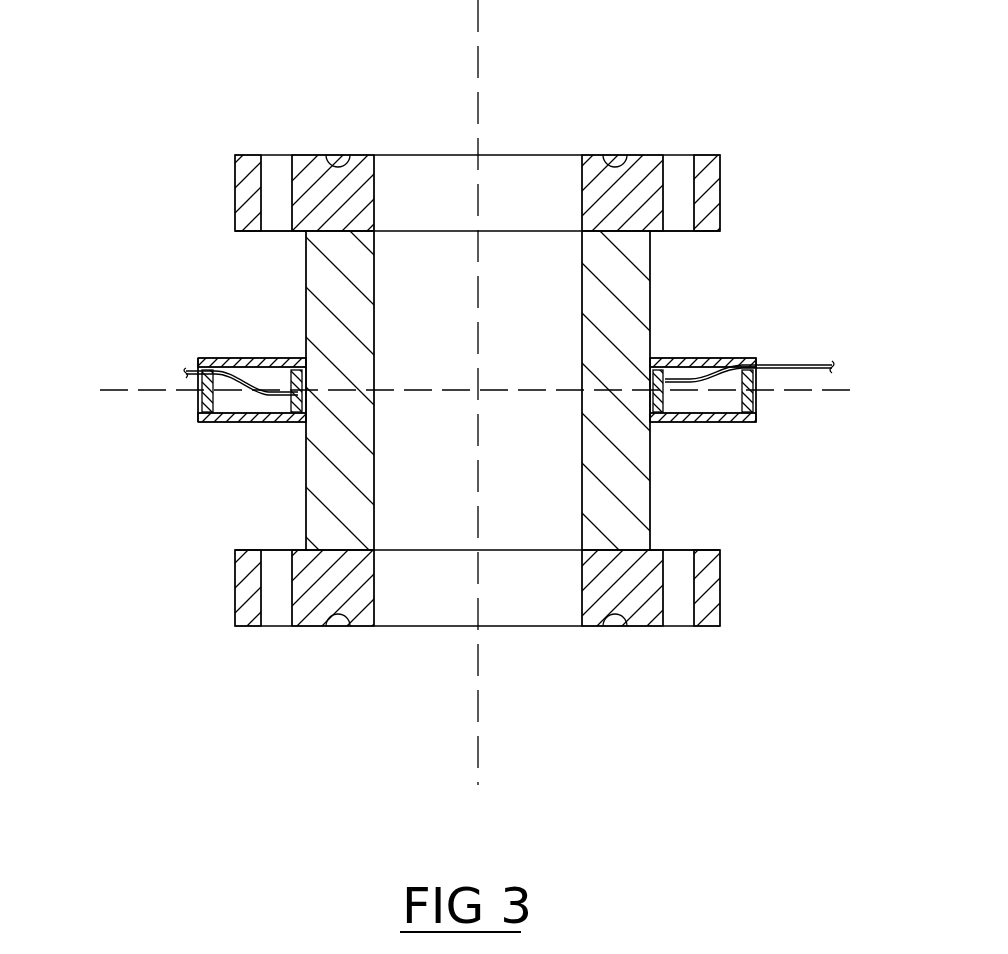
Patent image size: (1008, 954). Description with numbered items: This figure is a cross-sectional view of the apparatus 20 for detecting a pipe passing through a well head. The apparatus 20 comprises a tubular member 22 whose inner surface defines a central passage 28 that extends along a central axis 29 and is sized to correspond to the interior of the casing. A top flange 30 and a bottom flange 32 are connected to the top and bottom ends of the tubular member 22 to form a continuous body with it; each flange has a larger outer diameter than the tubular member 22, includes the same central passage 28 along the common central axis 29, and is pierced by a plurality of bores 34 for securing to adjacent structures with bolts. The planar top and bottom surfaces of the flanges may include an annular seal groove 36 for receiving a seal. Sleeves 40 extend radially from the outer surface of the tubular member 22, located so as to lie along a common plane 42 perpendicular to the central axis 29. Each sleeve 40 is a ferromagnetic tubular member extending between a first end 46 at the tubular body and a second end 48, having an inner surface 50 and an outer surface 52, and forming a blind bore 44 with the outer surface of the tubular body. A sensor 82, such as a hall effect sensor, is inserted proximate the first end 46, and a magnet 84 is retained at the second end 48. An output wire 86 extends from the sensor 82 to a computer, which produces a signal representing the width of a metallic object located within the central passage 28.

The apparatus 20 is at (653, 84).
The tubular member 22 is at (650, 277).
The central passage 28 is at (545, 597).
The central axis 29 is at (478, 772).
The top flange 30 is at (637, 155).
The bottom flange 32 is at (712, 626).
The bores 34 is at (275, 172).
The seal groove 36 is at (340, 155).
The sleeve 40 is at (252, 358).
The common plane 42 is at (108, 390).
The blind bore 44 is at (270, 392).
The first end 46 is at (306, 430).
The second end 48 is at (198, 365).
The inner surface 50 is at (257, 366).
The outer surface 52 is at (272, 422).
The sensor 82 is at (300, 370).
The magnet 84 is at (207, 405).
The output wire 86 is at (190, 372).